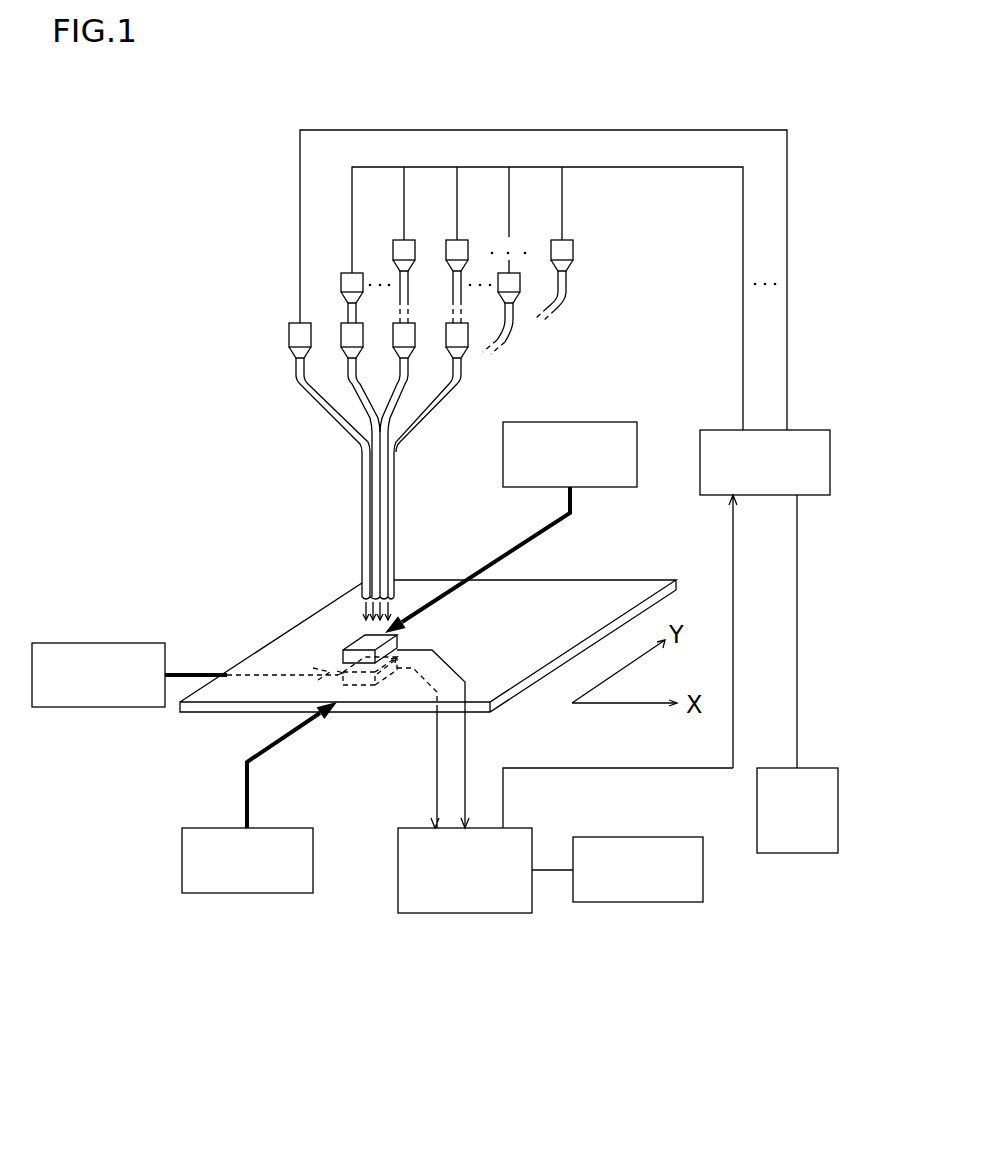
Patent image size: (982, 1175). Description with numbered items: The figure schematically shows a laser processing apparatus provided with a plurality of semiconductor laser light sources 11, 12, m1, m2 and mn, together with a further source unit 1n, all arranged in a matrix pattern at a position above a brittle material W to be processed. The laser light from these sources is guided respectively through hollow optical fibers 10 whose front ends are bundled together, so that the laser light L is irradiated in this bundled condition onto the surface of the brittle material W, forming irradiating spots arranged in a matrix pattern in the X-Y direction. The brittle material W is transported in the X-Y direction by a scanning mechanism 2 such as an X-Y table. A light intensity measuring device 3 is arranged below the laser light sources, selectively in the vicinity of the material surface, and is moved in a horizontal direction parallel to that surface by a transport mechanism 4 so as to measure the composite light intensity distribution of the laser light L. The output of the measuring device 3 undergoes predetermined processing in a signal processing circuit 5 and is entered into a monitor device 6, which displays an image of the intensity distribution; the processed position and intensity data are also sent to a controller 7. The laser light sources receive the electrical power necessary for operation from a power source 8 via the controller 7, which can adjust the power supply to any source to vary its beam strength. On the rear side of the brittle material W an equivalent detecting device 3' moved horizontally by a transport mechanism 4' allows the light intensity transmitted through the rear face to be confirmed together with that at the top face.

The laser light source 11 is at (290, 336).
The laser light source 12 is at (344, 283).
The laser light source m1 is at (395, 247).
The laser light source m2 is at (448, 246).
The laser light source mn is at (564, 246).
The laser light source unit 1n is at (461, 337).
The hollow optical fiber 10 is at (362, 518).
The laser light L is at (357, 613).
The brittle material W is at (543, 590).
The light intensity measuring device 3 is at (334, 725).
The detecting device 3' is at (332, 721).
The transport mechanism 4 is at (516, 492).
The transport mechanism 4' is at (129, 637).
The scanning mechanism 2 is at (282, 828).
The signal processing circuit 5 is at (507, 913).
The monitor device 6 is at (673, 902).
The controller 7 is at (800, 430).
The power source 8 is at (807, 768).